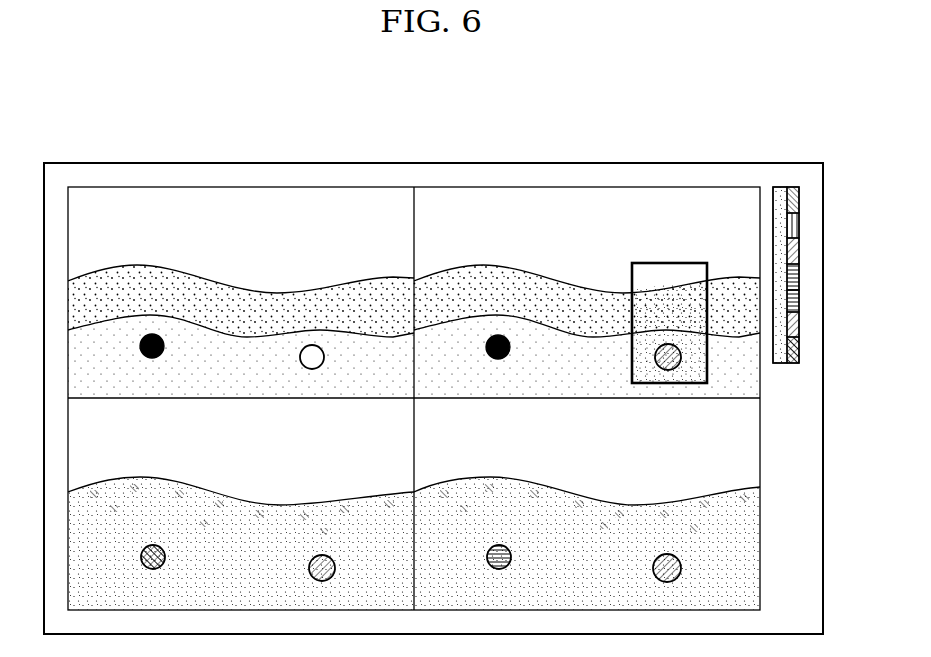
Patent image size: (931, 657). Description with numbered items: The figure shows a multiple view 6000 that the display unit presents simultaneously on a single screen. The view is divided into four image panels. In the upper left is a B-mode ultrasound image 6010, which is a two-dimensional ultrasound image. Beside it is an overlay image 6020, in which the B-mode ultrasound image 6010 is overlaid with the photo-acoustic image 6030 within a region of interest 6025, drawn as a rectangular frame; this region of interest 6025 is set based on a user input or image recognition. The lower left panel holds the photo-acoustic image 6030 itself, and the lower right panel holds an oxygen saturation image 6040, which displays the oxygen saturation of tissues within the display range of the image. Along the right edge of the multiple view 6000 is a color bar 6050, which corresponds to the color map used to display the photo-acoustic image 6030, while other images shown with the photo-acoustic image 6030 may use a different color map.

The multiple view 6000 is at (699, 141).
The B-mode ultrasound image 6010 is at (241, 296).
The overlay image 6020 is at (587, 296).
The region of interest 6025 is at (673, 263).
The photo-acoustic image 6030 is at (241, 507).
The oxygen saturation image 6040 is at (587, 507).
The color bar 6050 is at (787, 365).